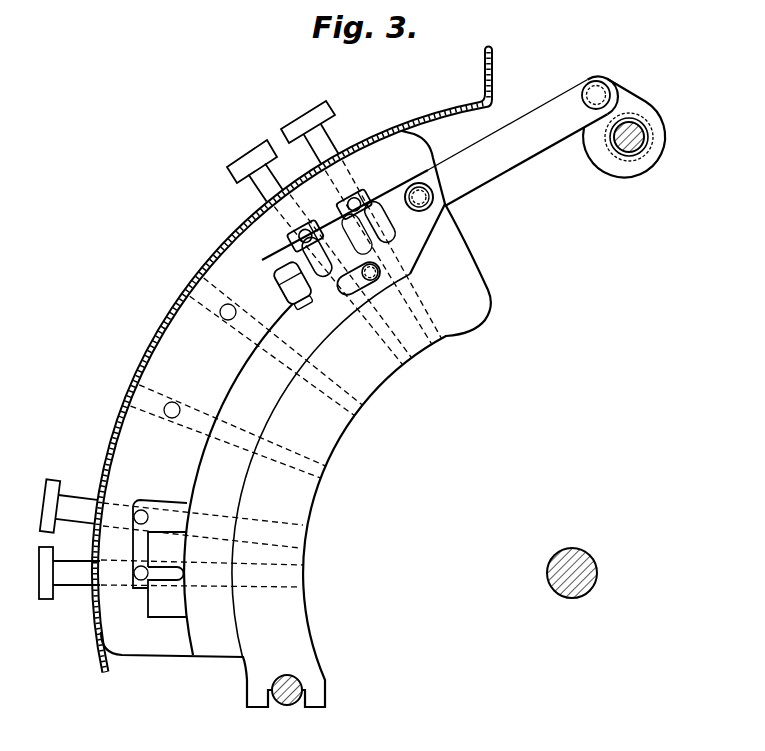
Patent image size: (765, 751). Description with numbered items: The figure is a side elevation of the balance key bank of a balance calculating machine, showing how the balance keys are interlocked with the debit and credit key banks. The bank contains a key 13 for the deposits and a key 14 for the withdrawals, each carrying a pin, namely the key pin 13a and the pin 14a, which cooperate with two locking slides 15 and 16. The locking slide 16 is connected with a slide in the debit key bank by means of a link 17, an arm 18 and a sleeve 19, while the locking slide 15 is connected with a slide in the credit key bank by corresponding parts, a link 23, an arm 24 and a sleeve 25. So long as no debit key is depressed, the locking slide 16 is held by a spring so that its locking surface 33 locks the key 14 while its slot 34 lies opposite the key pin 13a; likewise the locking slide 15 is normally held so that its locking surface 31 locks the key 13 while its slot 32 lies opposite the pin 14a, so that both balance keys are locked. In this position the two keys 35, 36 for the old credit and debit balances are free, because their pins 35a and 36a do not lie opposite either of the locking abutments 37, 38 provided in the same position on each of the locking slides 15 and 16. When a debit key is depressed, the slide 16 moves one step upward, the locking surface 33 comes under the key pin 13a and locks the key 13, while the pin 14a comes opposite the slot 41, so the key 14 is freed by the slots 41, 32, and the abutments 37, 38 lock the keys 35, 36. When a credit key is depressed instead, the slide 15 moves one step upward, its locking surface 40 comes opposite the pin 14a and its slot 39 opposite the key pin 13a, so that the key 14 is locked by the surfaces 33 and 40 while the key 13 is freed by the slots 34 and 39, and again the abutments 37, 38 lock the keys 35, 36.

The key for the deposits 13 is at (329, 111).
The key for the withdrawals 14 is at (237, 177).
The key pin 13a is at (352, 190).
The key pin 14a is at (297, 236).
The locking slide 15 is at (273, 273).
The locking slide 16 is at (282, 284).
The link 17 is at (523, 141).
The link 23 is at (523, 120).
The arm 18 is at (623, 84).
The arm 24 is at (620, 92).
The sleeve 19 is at (618, 158).
The sleeve 25 is at (645, 162).
The locking surface 31 is at (365, 209).
The slot 32 is at (327, 277).
The locking surface 33 is at (349, 223).
The slot 34 is at (378, 229).
The key for the old credit balance 35 is at (48, 503).
The pin 35a is at (143, 500).
The key for the old debit balance 36 is at (42, 582).
The pin 36a is at (142, 588).
The locking abutment 37 is at (133, 546).
The locking abutment 38 is at (148, 614).
The slot 39 is at (385, 243).
The locking surface 40 is at (295, 252).
The slot 41 is at (307, 297).